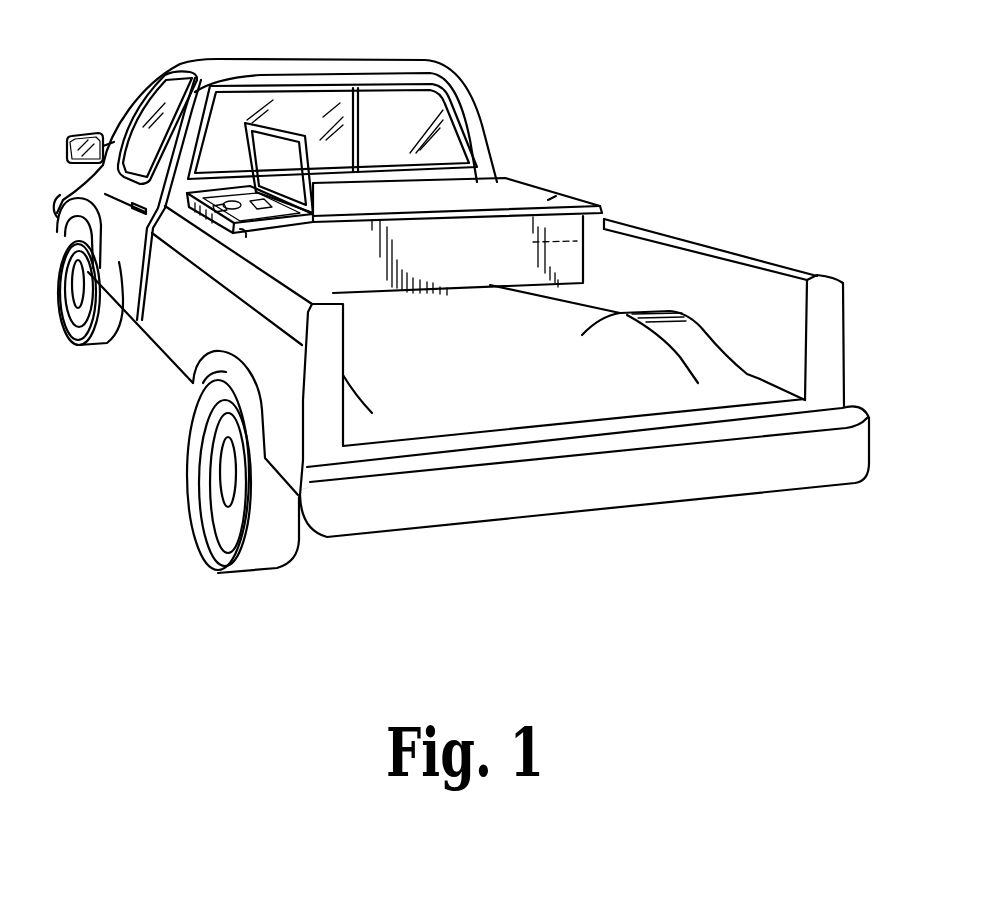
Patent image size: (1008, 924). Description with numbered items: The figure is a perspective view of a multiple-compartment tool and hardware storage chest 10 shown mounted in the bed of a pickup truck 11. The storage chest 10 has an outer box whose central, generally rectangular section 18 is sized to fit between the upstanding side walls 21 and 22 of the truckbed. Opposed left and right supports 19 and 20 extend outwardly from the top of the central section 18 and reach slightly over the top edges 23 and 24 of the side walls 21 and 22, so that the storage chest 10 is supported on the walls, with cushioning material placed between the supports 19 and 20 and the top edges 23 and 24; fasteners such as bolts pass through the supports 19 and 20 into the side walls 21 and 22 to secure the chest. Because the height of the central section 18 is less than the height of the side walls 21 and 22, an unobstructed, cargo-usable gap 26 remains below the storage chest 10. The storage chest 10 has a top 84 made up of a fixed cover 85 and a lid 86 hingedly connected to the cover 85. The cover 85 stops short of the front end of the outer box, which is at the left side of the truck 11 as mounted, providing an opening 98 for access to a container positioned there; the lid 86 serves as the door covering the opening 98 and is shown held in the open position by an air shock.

The multiple-compartment tool and hardware storage chest 10 is at (540, 168).
The pickup truck 11 is at (203, 60).
The central section 18 is at (493, 275).
The left support 19 is at (243, 232).
The right support 20 is at (496, 218).
The side wall 21 is at (247, 286).
The side wall 22 is at (843, 299).
The top edge 23 is at (320, 296).
The top edge 24 is at (697, 247).
The cargo-usable gap 26 is at (388, 301).
The top 84 is at (480, 184).
The fixed cover 85 is at (553, 197).
The lid 86 is at (279, 118).
The opening 98 is at (186, 128).